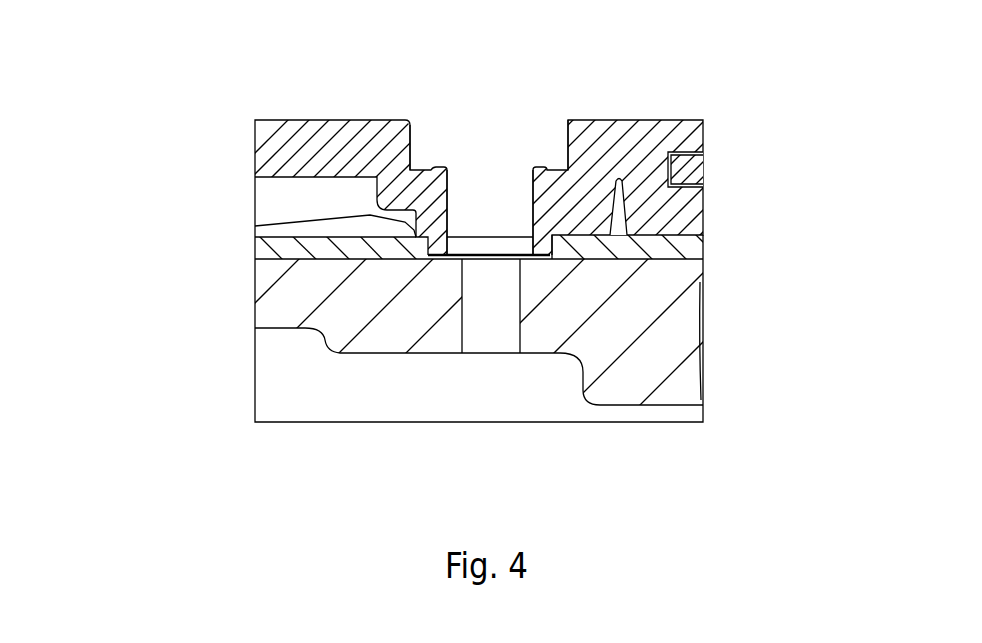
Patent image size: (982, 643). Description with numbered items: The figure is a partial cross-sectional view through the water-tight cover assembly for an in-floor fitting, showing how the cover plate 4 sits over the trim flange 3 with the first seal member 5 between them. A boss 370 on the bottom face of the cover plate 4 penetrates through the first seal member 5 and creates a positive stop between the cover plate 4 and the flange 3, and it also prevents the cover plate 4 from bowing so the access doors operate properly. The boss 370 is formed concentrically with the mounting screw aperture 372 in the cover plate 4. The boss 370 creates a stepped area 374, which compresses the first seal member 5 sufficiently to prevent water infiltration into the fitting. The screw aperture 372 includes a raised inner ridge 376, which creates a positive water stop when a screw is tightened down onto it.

The trim flange 3 is at (461, 340).
The cover plate 4 is at (453, 163).
The first seal member 5 is at (384, 273).
The boss 370 is at (548, 259).
The mounting screw aperture 372 is at (432, 143).
The stepped area 374 is at (224, 210).
The raised inner ridge 376 is at (640, 131).